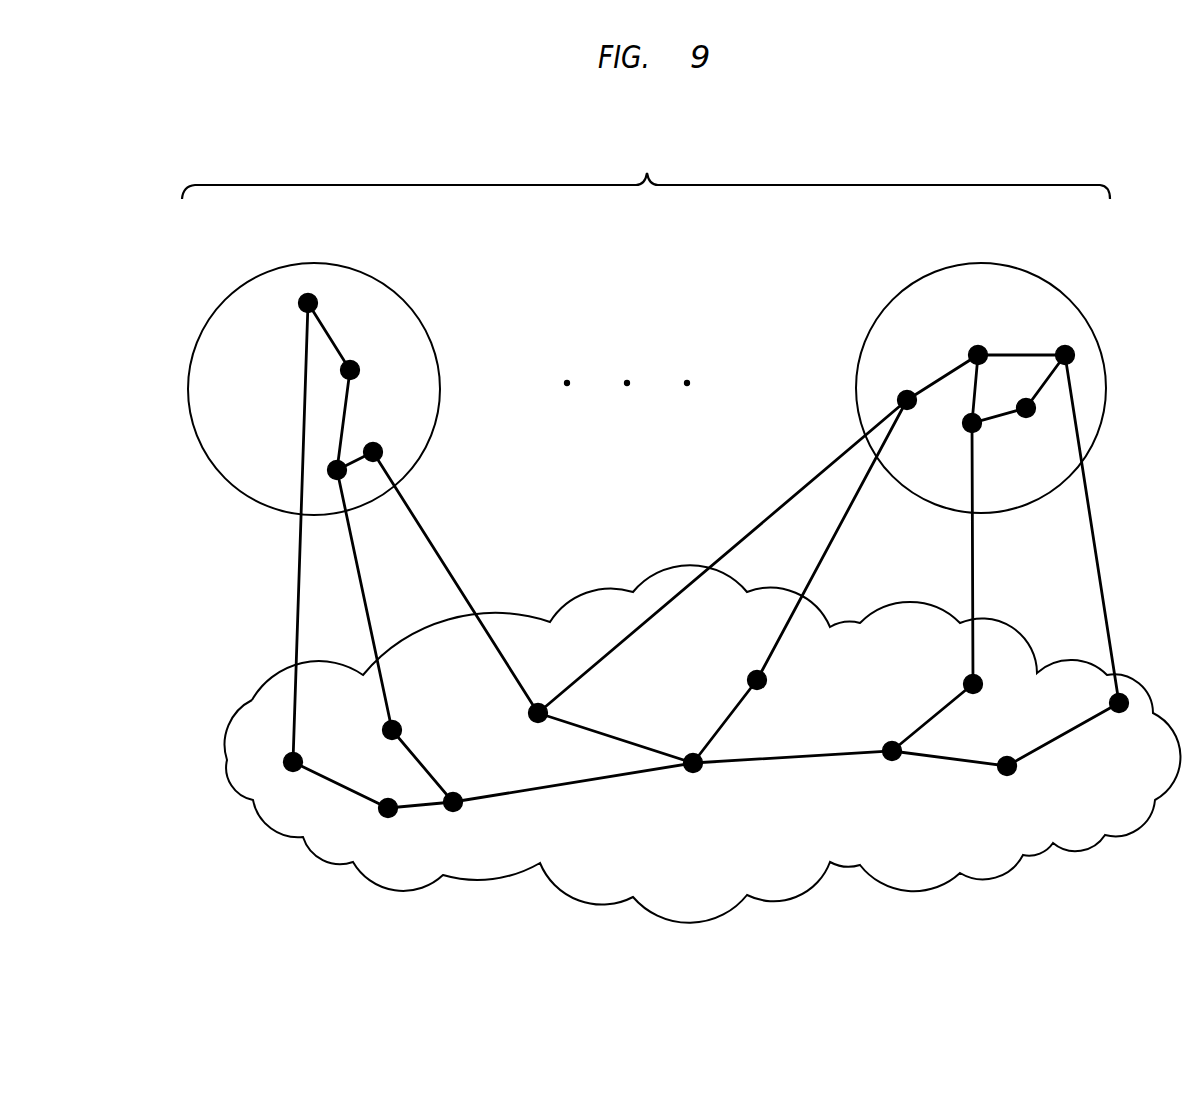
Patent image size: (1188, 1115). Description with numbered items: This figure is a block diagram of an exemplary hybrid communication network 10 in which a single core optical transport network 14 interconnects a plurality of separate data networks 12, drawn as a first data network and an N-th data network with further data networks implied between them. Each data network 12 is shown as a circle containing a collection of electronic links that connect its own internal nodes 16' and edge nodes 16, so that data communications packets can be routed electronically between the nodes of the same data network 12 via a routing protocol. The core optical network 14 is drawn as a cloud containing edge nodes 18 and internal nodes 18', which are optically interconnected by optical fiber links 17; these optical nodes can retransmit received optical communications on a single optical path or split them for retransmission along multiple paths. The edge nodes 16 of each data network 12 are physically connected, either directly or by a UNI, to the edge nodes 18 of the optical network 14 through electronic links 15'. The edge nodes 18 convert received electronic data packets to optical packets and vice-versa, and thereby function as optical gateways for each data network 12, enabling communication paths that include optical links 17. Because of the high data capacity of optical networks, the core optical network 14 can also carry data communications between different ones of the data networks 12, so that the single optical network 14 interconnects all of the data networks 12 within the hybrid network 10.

The hybrid communication network 10 is at (646, 167).
The data network 12 is at (950, 317).
The optical transport network 14 is at (455, 678).
The electronic links 15' is at (687, 532).
The edge nodes 16 is at (687, 387).
The internal nodes 16' is at (697, 393).
The optical fiber links 17 is at (343, 788).
The edge nodes 18 is at (712, 750).
The internal nodes 18' is at (702, 808).